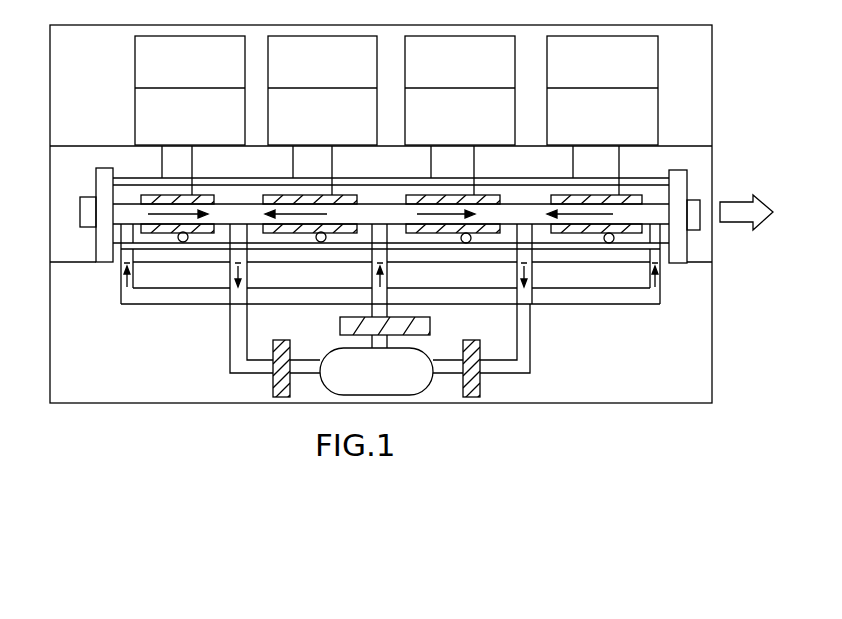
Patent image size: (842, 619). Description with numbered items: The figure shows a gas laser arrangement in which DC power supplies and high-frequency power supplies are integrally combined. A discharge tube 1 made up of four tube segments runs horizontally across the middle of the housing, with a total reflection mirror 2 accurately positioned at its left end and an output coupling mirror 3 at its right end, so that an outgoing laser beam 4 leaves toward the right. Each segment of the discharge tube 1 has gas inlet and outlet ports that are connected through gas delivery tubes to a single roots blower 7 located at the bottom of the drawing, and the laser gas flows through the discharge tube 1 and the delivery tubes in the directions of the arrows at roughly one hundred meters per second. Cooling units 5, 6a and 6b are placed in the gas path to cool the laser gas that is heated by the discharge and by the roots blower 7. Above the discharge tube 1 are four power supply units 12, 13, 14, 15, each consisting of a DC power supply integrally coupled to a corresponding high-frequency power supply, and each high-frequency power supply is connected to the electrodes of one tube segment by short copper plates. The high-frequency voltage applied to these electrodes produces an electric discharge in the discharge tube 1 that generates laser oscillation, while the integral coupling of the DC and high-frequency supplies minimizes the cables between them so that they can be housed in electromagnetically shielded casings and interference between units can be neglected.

The discharge tube 1 is at (657, 202).
The total reflection mirror 2 is at (87, 228).
The output coupling mirror 3 is at (700, 205).
The outgoing laser beam 4 is at (735, 222).
The cooling unit 5 is at (425, 318).
The cooling unit 6a is at (281, 344).
The cooling unit 6b is at (476, 343).
The roots blower 7 is at (386, 382).
The power supply unit 12 is at (165, 36).
The power supply unit 13 is at (300, 36).
The power supply unit 14 is at (437, 36).
The power supply unit 15 is at (569, 36).